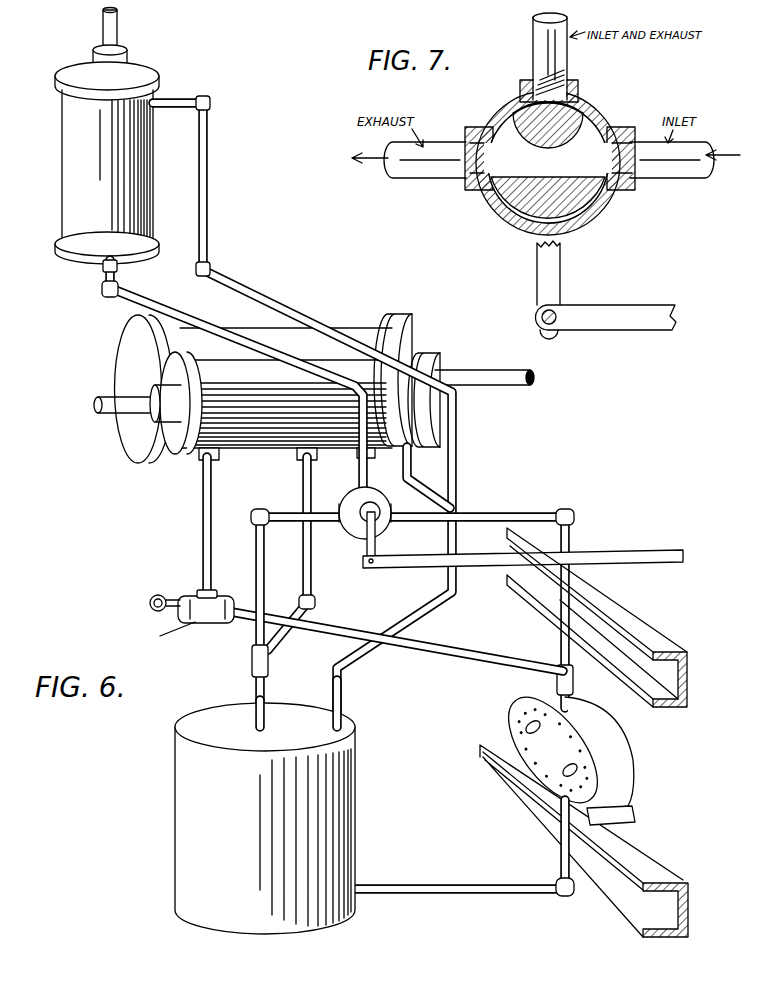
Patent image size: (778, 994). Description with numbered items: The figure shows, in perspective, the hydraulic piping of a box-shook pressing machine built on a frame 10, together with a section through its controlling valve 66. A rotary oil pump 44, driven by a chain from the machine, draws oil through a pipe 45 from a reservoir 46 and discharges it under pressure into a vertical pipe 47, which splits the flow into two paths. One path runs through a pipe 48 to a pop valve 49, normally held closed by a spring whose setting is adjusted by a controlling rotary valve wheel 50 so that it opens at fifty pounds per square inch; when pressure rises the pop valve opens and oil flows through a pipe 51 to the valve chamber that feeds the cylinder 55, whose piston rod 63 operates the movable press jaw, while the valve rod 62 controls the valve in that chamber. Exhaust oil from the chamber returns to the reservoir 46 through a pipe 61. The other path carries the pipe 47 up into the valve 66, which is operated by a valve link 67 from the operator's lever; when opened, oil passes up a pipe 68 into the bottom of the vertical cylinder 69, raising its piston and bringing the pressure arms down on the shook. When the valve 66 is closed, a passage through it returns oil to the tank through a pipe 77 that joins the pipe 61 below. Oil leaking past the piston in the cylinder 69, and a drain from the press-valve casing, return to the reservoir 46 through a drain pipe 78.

In FIG. 6, the frame 10 is at (652, 638).
In FIG. 6, the rotary liquid or oil pump 44 is at (635, 774).
In FIG. 6, the pipe 45 is at (460, 885).
In FIG. 6, the reservoir 46 is at (185, 814).
In FIG. 6, the vertical pipe 47 is at (562, 622).
In FIG. 7, the vertical pipe 47 is at (670, 172).
In FIG. 6, the pipe 48 is at (452, 656).
In FIG. 6, the pop valve 49 is at (212, 628).
In FIG. 6, the controlling rotary valve wheel 50 is at (153, 597).
In FIG. 6, the pipe and inlet 51 is at (203, 521).
In FIG. 6, the cylinder 55 is at (337, 330).
In FIG. 6, the pipe 61 is at (303, 484).
In FIG. 6, the valve rod 62 is at (120, 414).
In FIG. 6, the piston rod 63 is at (510, 386).
In FIG. 6, the valve 66 is at (358, 532).
In FIG. 7, the valve 66 is at (593, 118).
In FIG. 6, the valve link 67 is at (606, 554).
In FIG. 7, the valve link 67 is at (616, 308).
In FIG. 6, the pipe 68 is at (360, 465).
In FIG. 7, the pipe 68 is at (545, 53).
In FIG. 6, the vertical cylinder 69 is at (78, 157).
In FIG. 6, the pipe 77 is at (256, 577).
In FIG. 6, the drain pipe 78 is at (232, 283).